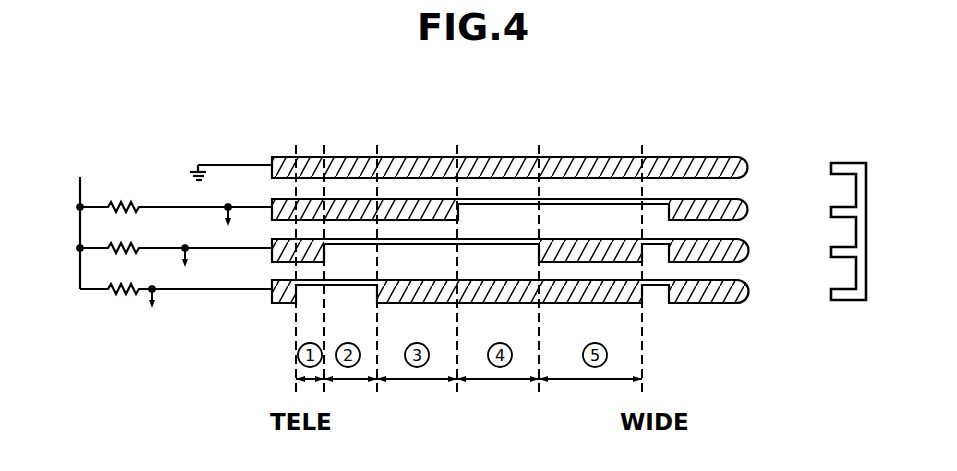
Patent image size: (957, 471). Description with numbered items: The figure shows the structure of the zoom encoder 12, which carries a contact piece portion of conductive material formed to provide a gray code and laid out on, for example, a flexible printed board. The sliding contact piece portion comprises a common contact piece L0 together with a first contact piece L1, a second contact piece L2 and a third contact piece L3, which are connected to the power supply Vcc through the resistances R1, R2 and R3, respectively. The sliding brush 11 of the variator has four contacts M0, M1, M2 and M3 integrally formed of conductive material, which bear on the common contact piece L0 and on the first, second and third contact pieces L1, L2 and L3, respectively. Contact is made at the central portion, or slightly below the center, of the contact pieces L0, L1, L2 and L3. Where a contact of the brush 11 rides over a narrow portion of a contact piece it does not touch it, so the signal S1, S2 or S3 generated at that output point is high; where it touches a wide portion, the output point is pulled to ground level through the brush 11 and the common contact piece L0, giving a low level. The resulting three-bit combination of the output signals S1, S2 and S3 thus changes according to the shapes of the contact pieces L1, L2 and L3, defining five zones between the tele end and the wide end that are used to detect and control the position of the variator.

The sliding brush 11 is at (869, 268).
The zoom encoder 12 is at (589, 146).
The common contact piece L0 is at (735, 157).
The first contact piece L1 is at (749, 203).
The second contact piece L2 is at (749, 245).
The third contact piece L3 is at (749, 285).
The contact M0 is at (842, 162).
The contact M1 is at (838, 208).
The contact M2 is at (838, 248).
The contact M3 is at (838, 289).
The resistance R1 is at (176, 192).
The resistance R2 is at (176, 235).
The resistance R3 is at (176, 276).
The output signal S1 is at (240, 220).
The output signal S2 is at (199, 263).
The output signal S3 is at (165, 308).
The power supply Vcc is at (86, 223).